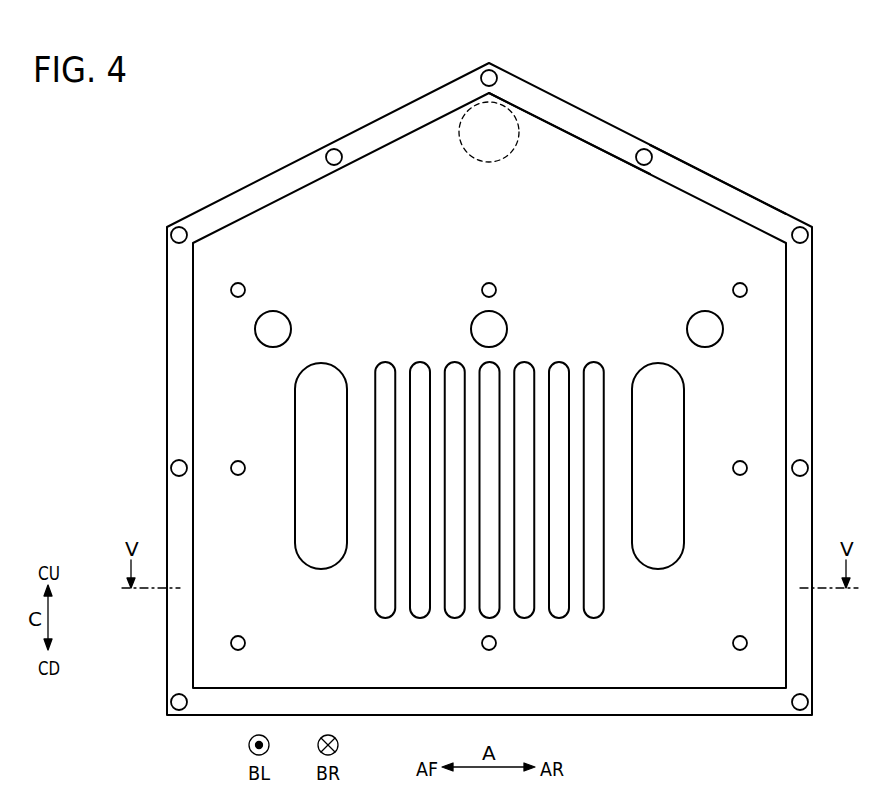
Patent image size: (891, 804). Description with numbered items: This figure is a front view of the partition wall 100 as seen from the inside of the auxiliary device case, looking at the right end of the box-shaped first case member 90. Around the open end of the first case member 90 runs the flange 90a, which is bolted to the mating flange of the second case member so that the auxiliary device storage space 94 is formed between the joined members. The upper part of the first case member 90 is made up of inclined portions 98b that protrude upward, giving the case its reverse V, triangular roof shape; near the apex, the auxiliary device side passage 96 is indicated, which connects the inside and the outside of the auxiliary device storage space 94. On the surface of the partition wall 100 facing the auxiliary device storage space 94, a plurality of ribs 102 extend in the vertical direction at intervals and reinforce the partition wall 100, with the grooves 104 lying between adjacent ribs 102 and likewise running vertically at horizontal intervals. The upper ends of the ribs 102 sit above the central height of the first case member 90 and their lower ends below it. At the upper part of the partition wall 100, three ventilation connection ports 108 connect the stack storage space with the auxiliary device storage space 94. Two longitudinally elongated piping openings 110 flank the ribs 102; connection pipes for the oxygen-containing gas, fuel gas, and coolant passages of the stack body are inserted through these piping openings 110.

The first case member 90 is at (813, 86).
The flange 90a is at (728, 195).
The auxiliary device storage space 94 is at (648, 682).
The auxiliary device side passage 96 is at (468, 147).
The inclined portion 98b is at (565, 152).
The partition wall 100 is at (760, 342).
The ribs 102 is at (541, 377).
The grooves 104 is at (560, 418).
The ventilation connection ports 108 is at (290, 323).
The piping openings 110 is at (340, 563).